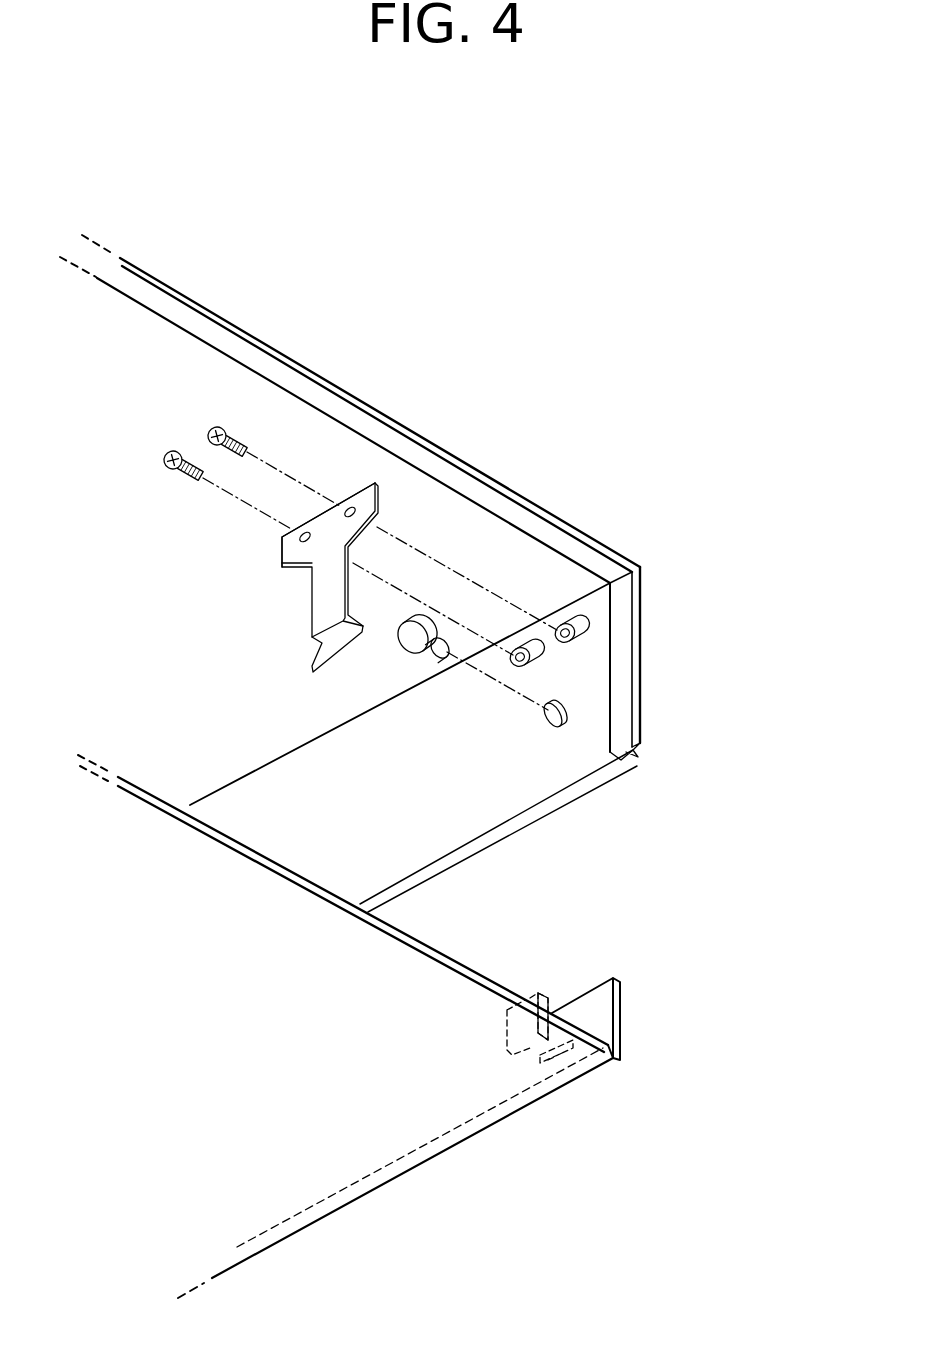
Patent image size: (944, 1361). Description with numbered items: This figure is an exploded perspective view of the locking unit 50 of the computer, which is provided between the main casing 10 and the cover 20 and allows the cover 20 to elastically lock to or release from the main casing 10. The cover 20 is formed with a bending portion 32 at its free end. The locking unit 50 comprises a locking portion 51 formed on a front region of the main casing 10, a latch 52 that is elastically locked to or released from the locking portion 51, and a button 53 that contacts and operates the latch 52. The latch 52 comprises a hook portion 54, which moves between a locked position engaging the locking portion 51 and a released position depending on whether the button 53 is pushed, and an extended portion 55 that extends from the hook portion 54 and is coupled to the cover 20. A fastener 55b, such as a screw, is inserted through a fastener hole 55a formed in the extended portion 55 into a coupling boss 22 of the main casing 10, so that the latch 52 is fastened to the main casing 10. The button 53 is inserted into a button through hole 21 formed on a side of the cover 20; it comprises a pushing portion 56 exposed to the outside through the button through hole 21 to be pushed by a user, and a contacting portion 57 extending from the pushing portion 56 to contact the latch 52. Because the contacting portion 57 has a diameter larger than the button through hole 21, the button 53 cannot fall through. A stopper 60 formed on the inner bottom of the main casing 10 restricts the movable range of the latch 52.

The main casing 10 is at (410, 1168).
The cover 20 is at (447, 868).
The button through hole 21 is at (542, 670).
The coupling boss 22 is at (585, 660).
The bending portion 32 is at (635, 768).
The locking unit 50 is at (748, 478).
The locking portion 51 is at (553, 1043).
The latch 52 is at (365, 553).
The button 53 is at (453, 630).
The hook portion 54 is at (310, 610).
The extended portion 55 is at (283, 547).
The fastener hole 55a is at (304, 532).
The fastener 55b is at (173, 450).
The pushing portion 56 is at (443, 660).
The contacting portion 57 is at (413, 660).
The stopper 60 is at (520, 1057).